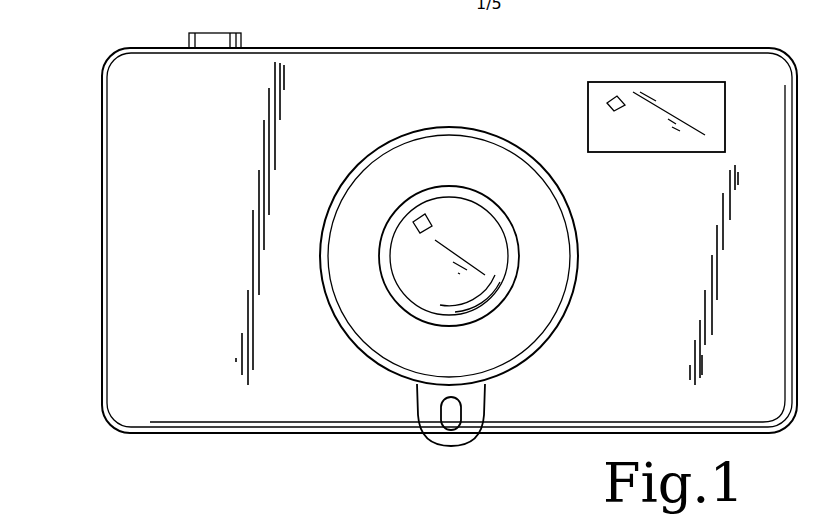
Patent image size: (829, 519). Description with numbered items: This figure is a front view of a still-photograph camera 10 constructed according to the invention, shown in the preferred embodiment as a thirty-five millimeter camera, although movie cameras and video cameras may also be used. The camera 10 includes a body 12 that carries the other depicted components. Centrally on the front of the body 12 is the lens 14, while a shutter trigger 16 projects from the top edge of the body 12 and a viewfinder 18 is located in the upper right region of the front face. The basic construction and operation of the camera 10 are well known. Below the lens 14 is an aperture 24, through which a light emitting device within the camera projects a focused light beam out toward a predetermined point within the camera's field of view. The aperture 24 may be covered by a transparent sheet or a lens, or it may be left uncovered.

The camera 10 is at (86, 197).
The body 12 is at (130, 404).
The lens 14 is at (493, 235).
The shutter trigger 16 is at (222, 33).
The viewfinder 18 is at (682, 95).
The aperture 24 is at (440, 419).